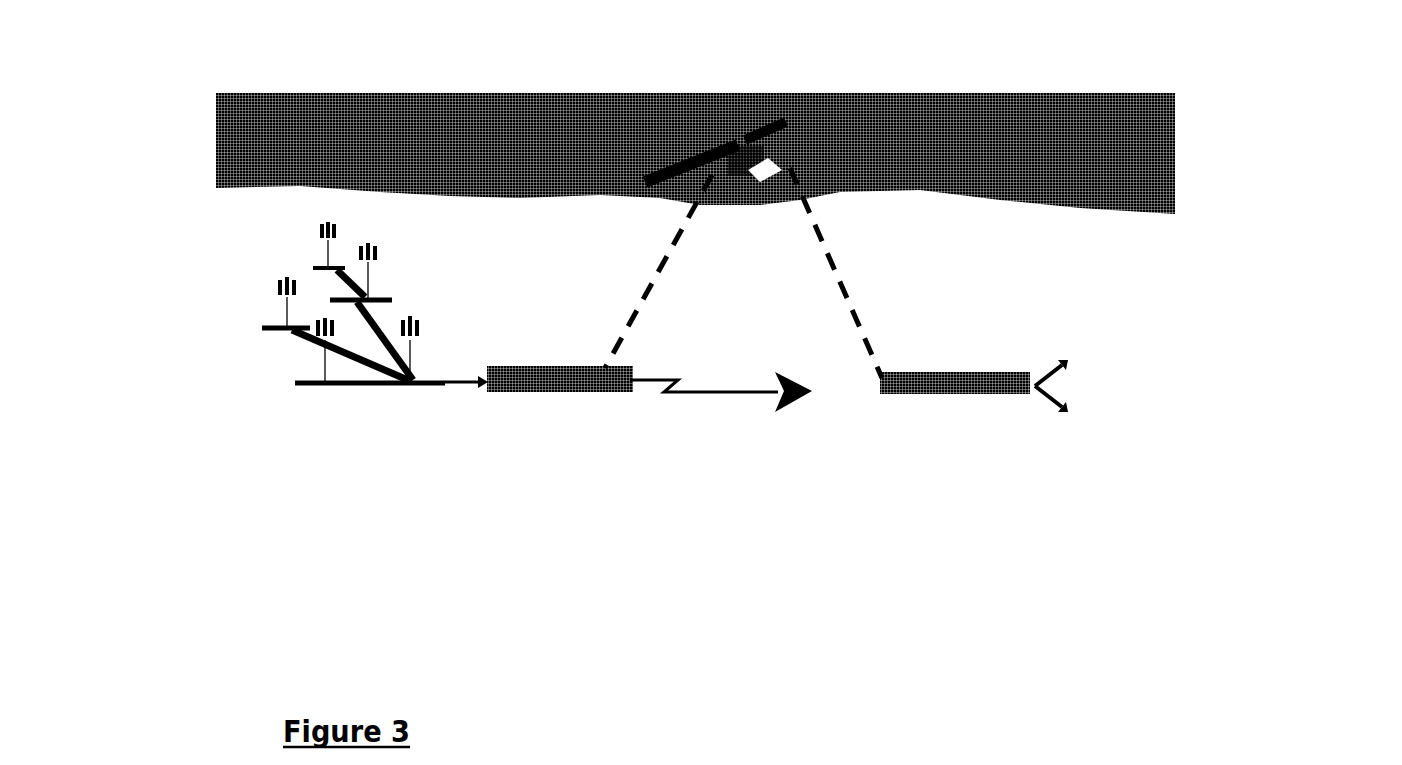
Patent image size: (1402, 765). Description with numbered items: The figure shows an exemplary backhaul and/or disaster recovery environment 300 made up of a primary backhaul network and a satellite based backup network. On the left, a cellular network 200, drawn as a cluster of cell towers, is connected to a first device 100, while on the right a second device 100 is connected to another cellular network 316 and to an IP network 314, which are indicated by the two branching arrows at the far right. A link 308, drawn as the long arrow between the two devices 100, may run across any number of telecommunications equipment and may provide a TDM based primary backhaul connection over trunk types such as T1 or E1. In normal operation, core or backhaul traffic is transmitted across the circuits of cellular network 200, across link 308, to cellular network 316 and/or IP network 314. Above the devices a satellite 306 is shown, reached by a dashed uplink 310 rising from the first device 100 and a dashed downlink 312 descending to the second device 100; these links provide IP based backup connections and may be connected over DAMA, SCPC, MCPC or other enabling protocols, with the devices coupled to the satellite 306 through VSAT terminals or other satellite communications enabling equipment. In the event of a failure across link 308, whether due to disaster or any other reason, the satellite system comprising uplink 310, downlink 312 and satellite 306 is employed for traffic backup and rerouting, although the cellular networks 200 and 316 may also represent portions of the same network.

The backhaul and/or disaster recovery environment 300 is at (282, 38).
The satellite 306 is at (630, 180).
The uplink 310 is at (668, 268).
The downlink 312 is at (830, 230).
The cellular network 200 is at (305, 424).
The device 100 is at (575, 424).
The link 308 is at (715, 437).
The cellular network 316 is at (1210, 359).
The IP network 314 is at (1163, 412).